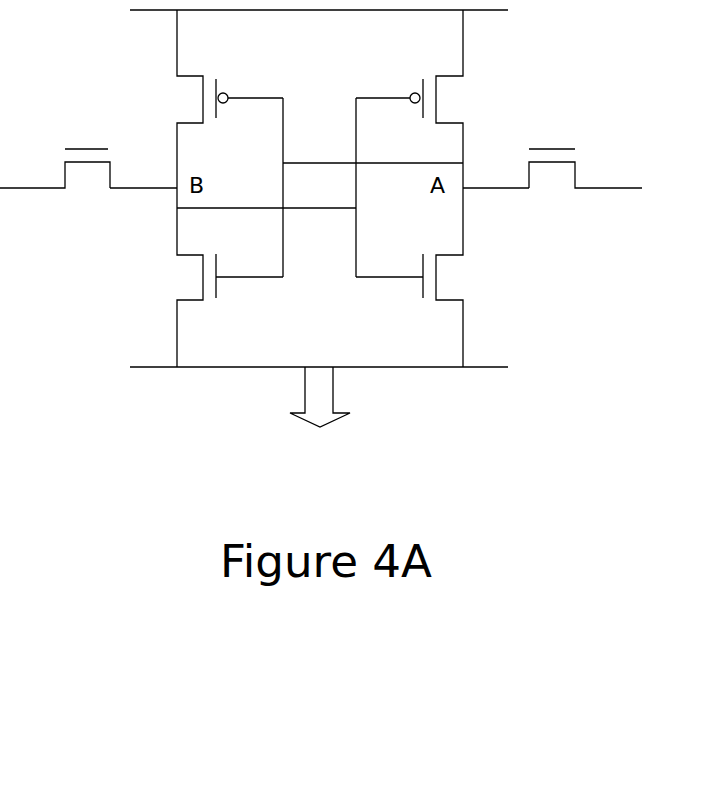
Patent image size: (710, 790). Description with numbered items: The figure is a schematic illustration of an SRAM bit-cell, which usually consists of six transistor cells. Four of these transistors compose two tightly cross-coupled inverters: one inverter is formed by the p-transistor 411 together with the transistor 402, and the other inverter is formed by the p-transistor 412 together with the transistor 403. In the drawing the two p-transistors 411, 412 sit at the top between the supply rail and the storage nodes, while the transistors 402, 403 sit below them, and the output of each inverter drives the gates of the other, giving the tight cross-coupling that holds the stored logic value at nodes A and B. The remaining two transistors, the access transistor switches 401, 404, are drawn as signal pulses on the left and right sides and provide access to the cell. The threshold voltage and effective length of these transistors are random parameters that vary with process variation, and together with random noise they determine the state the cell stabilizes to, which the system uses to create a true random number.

The access transistor switch 401 is at (95, 149).
The access transistor switch 404 is at (565, 149).
The p-transistor 411 is at (218, 88).
The p-transistor 412 is at (420, 87).
The transistor 402 is at (218, 292).
The transistor 403 is at (420, 292).